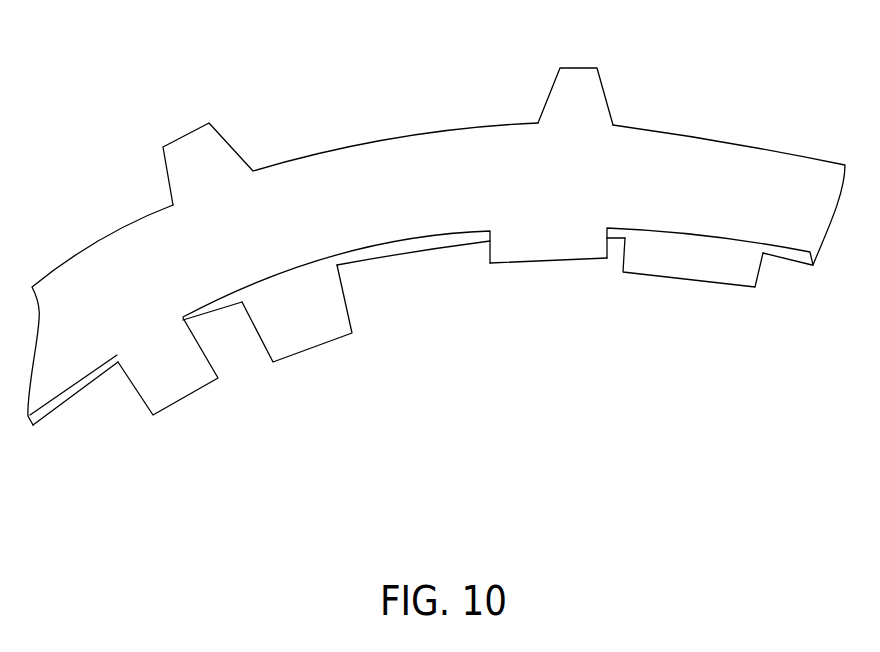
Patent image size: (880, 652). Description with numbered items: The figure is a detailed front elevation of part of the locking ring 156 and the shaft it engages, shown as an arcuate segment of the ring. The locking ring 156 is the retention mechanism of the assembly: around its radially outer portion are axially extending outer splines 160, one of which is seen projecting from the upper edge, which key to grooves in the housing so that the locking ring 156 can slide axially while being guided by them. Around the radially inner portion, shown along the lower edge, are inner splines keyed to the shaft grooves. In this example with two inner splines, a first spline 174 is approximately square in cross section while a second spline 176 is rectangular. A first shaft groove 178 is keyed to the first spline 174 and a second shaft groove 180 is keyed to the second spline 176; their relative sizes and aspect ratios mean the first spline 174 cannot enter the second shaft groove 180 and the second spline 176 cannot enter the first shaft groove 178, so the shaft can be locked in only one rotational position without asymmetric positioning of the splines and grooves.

The locking ring 156 is at (405, 137).
The outer splines 160 is at (583, 65).
The first spline 174 is at (180, 400).
The second spline 176 is at (538, 263).
The first shaft groove 178 is at (330, 343).
The second shaft groove 180 is at (660, 275).